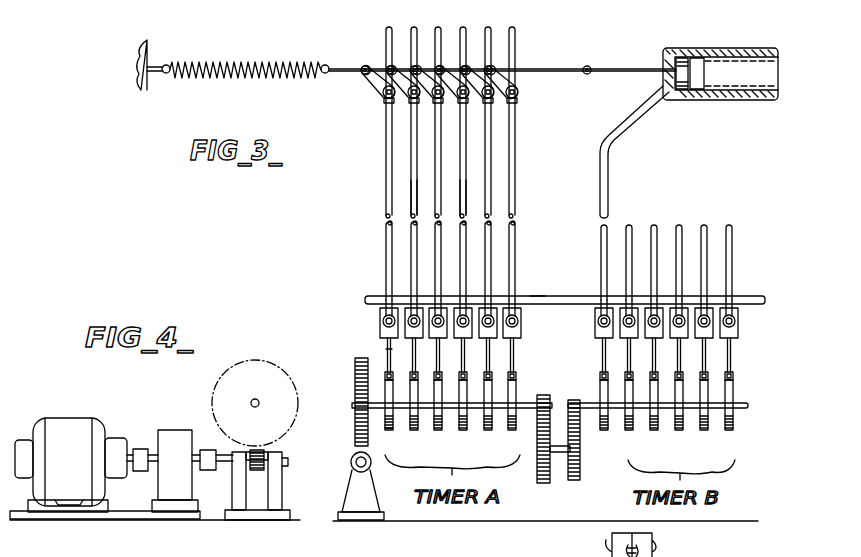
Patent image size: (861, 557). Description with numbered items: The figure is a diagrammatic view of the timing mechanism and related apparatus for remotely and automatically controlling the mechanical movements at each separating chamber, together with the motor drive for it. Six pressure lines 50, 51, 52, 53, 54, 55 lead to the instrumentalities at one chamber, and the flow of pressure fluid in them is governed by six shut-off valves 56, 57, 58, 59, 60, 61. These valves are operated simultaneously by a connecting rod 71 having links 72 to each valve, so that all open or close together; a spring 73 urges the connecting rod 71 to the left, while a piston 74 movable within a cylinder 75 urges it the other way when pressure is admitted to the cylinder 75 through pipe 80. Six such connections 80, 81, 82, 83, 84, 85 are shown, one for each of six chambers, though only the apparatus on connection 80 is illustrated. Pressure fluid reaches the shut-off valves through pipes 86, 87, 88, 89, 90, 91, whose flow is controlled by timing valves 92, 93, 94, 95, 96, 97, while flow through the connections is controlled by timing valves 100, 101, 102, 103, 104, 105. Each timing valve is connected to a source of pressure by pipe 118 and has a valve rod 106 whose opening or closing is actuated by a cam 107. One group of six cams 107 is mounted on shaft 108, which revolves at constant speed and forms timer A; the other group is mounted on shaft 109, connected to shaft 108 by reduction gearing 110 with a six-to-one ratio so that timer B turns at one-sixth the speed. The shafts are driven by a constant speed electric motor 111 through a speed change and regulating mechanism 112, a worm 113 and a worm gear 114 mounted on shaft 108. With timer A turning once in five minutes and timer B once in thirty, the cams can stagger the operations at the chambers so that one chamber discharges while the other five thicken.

In FIG. 3, the pressure line 50 is at (390, 30).
In FIG. 3, the pressure line 51 is at (415, 30).
In FIG. 3, the pressure line 52 is at (440, 30).
In FIG. 3, the pressure line 53 is at (465, 30).
In FIG. 3, the pressure line 54 is at (490, 30).
In FIG. 3, the pressure line 55 is at (515, 30).
In FIG. 3, the shut-off valve 56 is at (383, 96).
In FIG. 3, the shut-off valve 57 is at (408, 100).
In FIG. 3, the shut-off valve 58 is at (432, 101).
In FIG. 3, the shut-off valve 59 is at (468, 101).
In FIG. 3, the shut-off valve 60 is at (495, 101).
In FIG. 3, the shut-off valve 61 is at (520, 93).
In FIG. 3, the connecting rod 71 is at (564, 66).
In FIG. 3, the links 72 is at (413, 66).
In FIG. 3, the spring 73 is at (245, 56).
In FIG. 3, the piston 74 is at (700, 57).
In FIG. 3, the cylinder 75 is at (747, 48).
In FIG. 3, the pipe 80 is at (600, 250).
In FIG. 3, the connection 81 is at (629, 226).
In FIG. 3, the connection 82 is at (654, 226).
In FIG. 3, the connection 83 is at (679, 226).
In FIG. 3, the connection 84 is at (704, 226).
In FIG. 3, the connection 85 is at (729, 226).
In FIG. 3, the pipe 86 is at (386, 222).
In FIG. 3, the pipe 87 is at (413, 190).
In FIG. 3, the pipe 88 is at (436, 233).
In FIG. 3, the pipe 89 is at (466, 203).
In FIG. 3, the pipe 90 is at (514, 222).
In FIG. 3, the pipe 91 is at (515, 238).
In FIG. 3, the timing valve 92 is at (380, 310).
In FIG. 3, the timing valve 93 is at (398, 330).
In FIG. 3, the timing valve 94 is at (440, 338).
In FIG. 3, the timing valve 95 is at (482, 338).
In FIG. 3, the timing valve 96 is at (521, 314).
In FIG. 3, the timing valve 97 is at (536, 296).
In FIG. 3, the timing valve 100 is at (596, 326).
In FIG. 3, the timing valve 101 is at (620, 332).
In FIG. 3, the timing valve 102 is at (650, 335).
In FIG. 3, the timing valve 103 is at (690, 348).
In FIG. 3, the timing valve 104 is at (714, 334).
In FIG. 3, the timing valve 105 is at (738, 313).
In FIG. 3, the valve rod 106 is at (420, 355).
In FIG. 3, the cam 107 is at (512, 428).
In FIG. 3, the shaft 108 is at (538, 396).
In FIG. 4, the shaft 108 is at (255, 399).
In FIG. 3, the shaft 109 is at (745, 405).
In FIG. 3, the reduction gearing 110 is at (598, 468).
In FIG. 4, the electric motor 111 is at (73, 420).
In FIG. 4, the speed change and regulating mechanism 112 is at (179, 430).
In FIG. 3, the worm 113 is at (350, 462).
In FIG. 4, the worm 113 is at (257, 449).
In FIG. 3, the worm gear 114 is at (355, 426).
In FIG. 4, the worm gear 114 is at (259, 361).
In FIG. 3, the pipe 118 is at (365, 298).